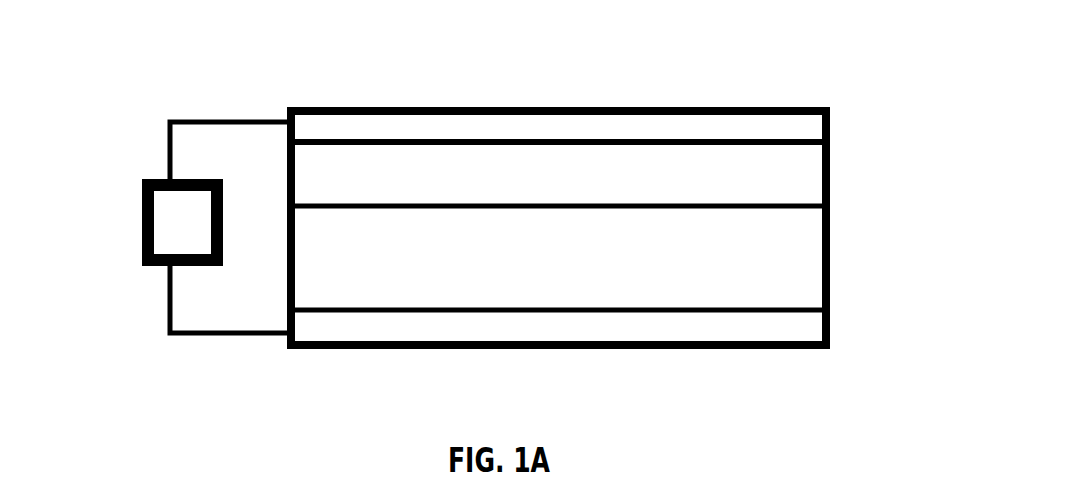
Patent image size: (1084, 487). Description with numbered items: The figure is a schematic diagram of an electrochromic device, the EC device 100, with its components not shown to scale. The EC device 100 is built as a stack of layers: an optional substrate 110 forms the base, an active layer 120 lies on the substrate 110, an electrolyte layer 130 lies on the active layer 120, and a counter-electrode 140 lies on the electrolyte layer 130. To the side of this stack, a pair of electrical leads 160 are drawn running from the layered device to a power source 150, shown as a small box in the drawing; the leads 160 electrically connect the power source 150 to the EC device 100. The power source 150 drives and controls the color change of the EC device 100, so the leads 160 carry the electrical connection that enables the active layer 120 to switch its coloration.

The EC device 100 is at (780, 88).
The substrate 110 is at (558, 330).
The active layer 120 is at (558, 284).
The electrolyte layer 130 is at (558, 188).
The counter-electrode 140 is at (558, 128).
The load / power source 150 is at (182, 222).
The electrical leads 160 is at (209, 121).